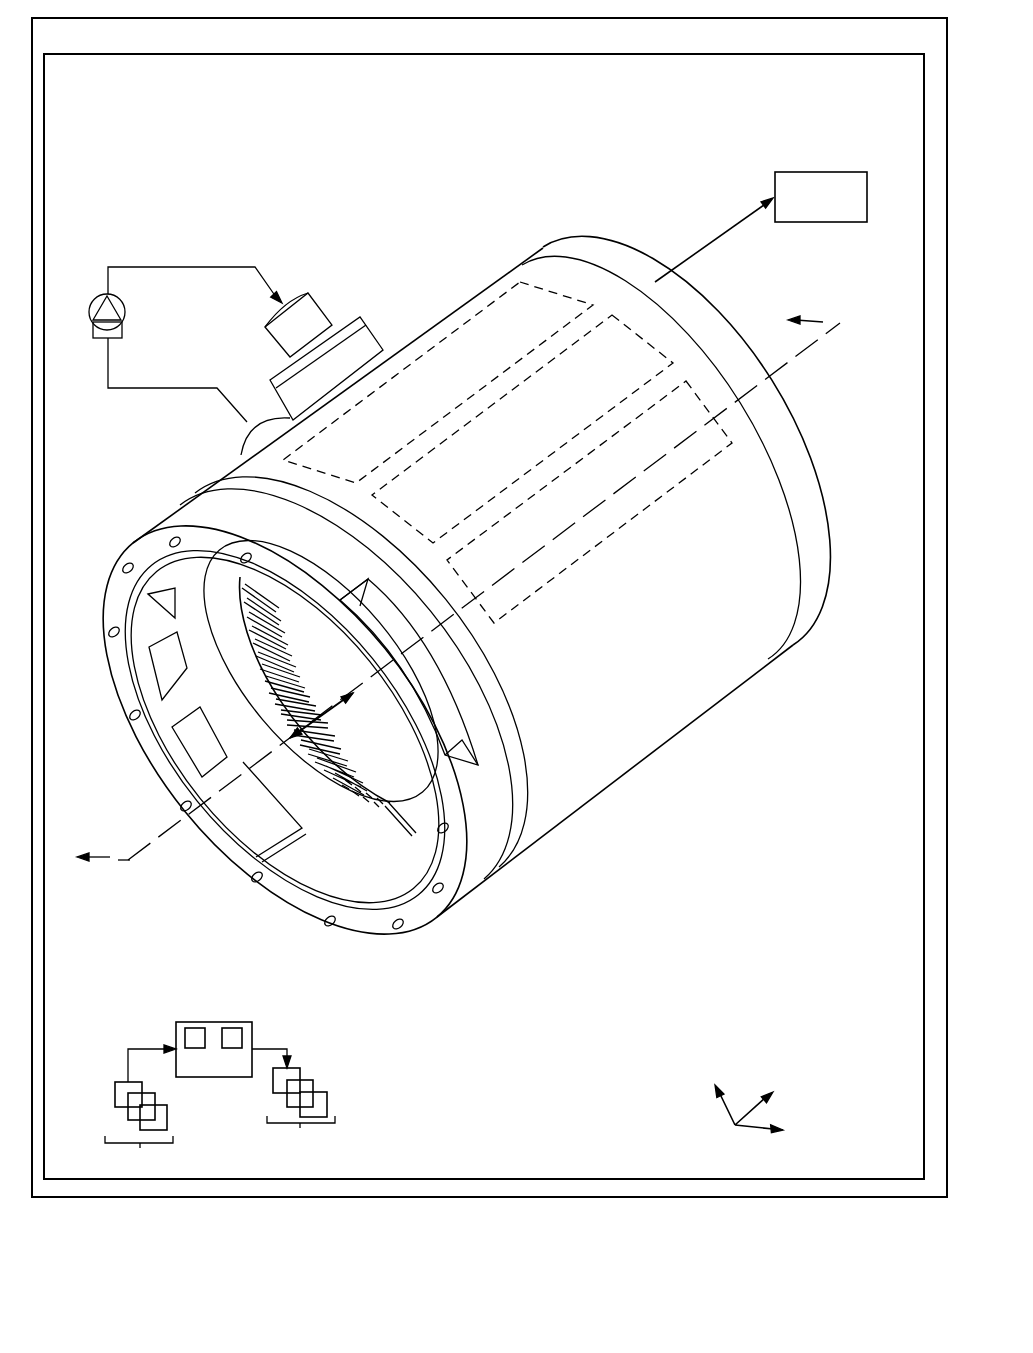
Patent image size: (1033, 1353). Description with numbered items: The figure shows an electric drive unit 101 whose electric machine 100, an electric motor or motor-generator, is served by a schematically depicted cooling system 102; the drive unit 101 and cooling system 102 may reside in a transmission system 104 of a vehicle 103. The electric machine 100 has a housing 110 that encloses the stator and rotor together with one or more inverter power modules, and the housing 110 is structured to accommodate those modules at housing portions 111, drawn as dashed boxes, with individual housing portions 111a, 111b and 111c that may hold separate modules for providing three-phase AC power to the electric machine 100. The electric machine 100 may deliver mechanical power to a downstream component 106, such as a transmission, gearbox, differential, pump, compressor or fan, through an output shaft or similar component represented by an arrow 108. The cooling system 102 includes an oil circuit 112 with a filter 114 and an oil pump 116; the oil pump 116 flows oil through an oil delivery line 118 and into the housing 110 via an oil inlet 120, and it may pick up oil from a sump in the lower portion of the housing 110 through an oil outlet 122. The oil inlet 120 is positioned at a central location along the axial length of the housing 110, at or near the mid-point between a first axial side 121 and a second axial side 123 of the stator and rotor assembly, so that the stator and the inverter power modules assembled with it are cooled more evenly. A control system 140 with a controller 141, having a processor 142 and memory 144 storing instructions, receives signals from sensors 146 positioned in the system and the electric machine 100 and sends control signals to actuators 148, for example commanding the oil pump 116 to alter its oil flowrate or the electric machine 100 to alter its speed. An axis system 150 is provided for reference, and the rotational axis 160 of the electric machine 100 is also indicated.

The electric machine 100 is at (590, 158).
The electric drive unit 101 is at (118, 119).
The cooling system 102 is at (301, 209).
The vehicle 103 is at (48, 18).
The transmission system 104 is at (70, 54).
The downstream component 106 is at (815, 172).
The arrow 108 is at (715, 239).
The housing 110 is at (584, 268).
The housing portions 111 is at (362, 158).
The housing portion 111a is at (462, 325).
The housing portion 111b is at (514, 388).
The housing portion 111c is at (602, 437).
The oil circuit 112 is at (103, 241).
The filter 114 is at (118, 340).
The oil pump 116 is at (126, 312).
The oil delivery line 118 is at (205, 267).
The oil inlet 120 is at (325, 305).
The first axial side 121 is at (239, 692).
The oil outlet 122 is at (240, 452).
The second axial side 123 is at (722, 326).
The control system 140 is at (104, 1011).
The controller 141 is at (200, 1022).
The processor 142 is at (183, 1035).
The memory 144 is at (243, 1035).
The sensors 146 is at (140, 1110).
The actuators 148 is at (293, 1104).
The axis system 150 is at (806, 1072).
The rotational axis 160 is at (330, 705).